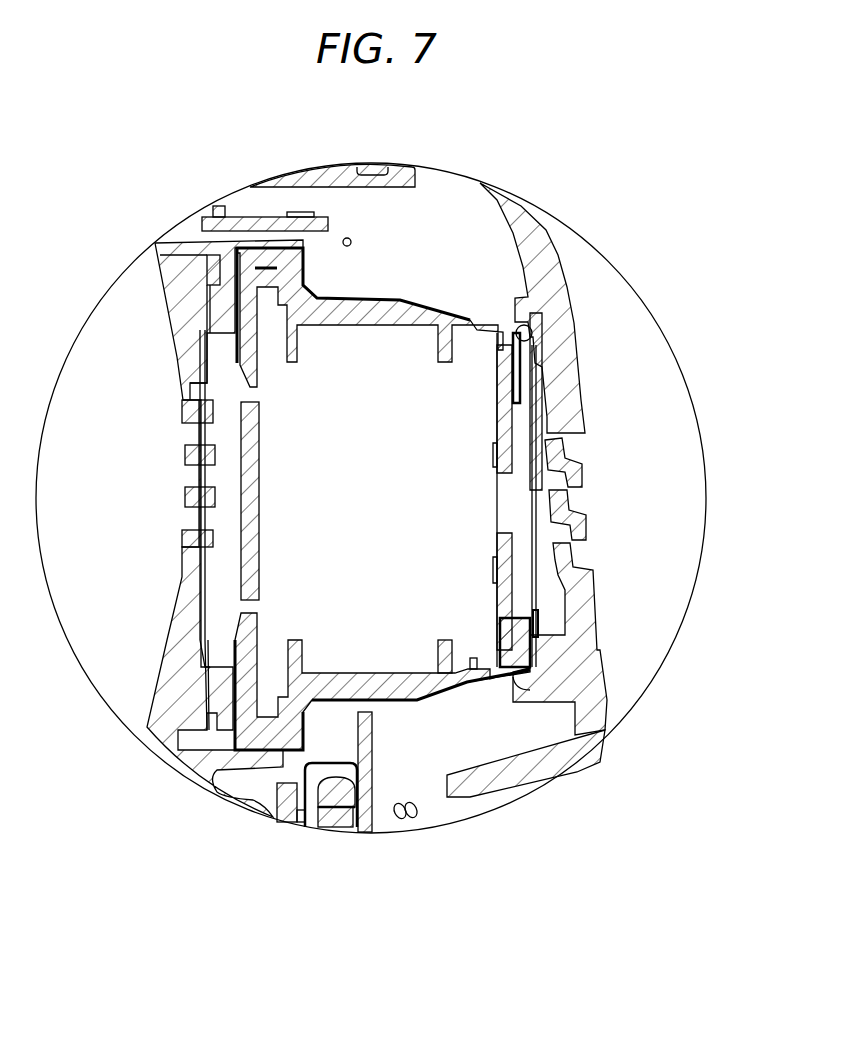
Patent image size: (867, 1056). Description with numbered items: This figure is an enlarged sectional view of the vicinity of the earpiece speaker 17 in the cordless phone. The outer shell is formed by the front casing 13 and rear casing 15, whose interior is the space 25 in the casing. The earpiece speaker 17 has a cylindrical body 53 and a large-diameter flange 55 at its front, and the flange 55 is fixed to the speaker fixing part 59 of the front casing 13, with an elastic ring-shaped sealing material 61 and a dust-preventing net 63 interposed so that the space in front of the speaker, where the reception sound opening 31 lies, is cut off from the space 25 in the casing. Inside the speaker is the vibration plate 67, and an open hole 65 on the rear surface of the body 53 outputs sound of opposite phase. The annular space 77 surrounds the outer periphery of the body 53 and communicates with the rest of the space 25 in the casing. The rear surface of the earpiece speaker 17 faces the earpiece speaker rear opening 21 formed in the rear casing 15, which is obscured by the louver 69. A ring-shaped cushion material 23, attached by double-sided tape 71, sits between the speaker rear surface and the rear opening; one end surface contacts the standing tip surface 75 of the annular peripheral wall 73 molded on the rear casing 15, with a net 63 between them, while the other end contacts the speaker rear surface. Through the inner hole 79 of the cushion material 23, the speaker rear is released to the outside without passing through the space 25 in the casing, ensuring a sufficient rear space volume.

The front casing 13 is at (148, 718).
The rear casing 15 is at (556, 252).
The earpiece speaker 17 is at (452, 292).
The earpiece speaker rear opening 21 is at (600, 450).
The cushion material 23 is at (507, 675).
The space in the casing 25 is at (418, 763).
The reception sound opening 31 is at (200, 430).
The body 53 is at (405, 292).
The flange 55 is at (305, 274).
The speaker fixing part 59 is at (205, 693).
The sealing material 61 is at (200, 355).
The net 63 is at (578, 398).
The open hole 65 is at (502, 533).
The vibration plate 67 is at (241, 517).
The louver 69 is at (585, 477).
The double-sided tape 71 is at (515, 593).
The peripheral wall 73 is at (597, 618).
The standing tip surface 75 is at (530, 330).
The annular space 77 is at (392, 222).
The inner hole 79 is at (523, 403).